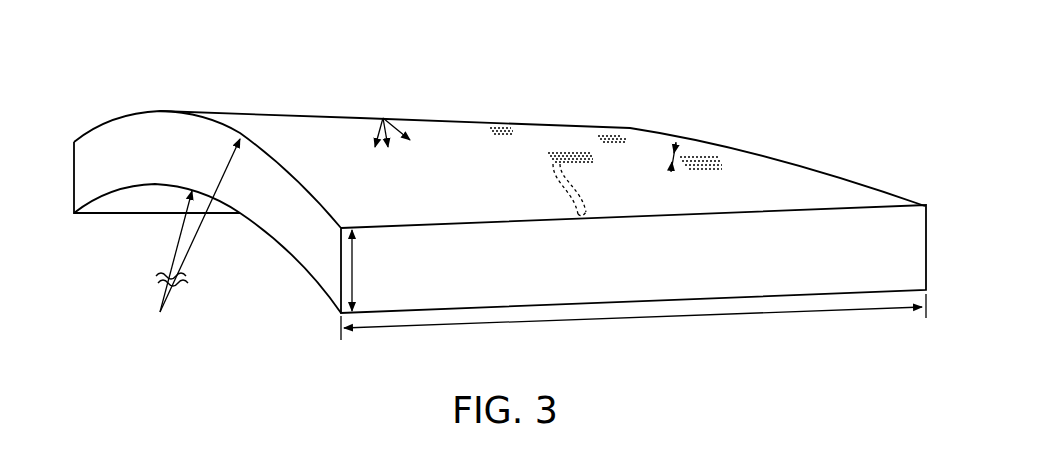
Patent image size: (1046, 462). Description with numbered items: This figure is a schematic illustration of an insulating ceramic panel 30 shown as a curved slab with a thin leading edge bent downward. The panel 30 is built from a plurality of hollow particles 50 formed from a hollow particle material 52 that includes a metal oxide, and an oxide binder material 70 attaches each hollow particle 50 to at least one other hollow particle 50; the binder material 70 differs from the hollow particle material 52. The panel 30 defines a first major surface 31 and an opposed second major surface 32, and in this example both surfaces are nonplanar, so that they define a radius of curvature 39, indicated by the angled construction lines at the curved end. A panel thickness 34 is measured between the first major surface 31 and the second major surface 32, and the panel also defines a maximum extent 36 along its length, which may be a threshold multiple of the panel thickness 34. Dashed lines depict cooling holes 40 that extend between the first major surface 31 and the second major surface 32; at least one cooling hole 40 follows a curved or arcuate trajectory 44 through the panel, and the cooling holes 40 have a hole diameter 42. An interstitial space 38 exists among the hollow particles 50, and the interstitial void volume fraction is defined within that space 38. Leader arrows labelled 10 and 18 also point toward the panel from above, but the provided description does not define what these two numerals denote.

The article of footwear 10 is at (157, 68).
The sole structure 18 is at (195, 74).
The insulating ceramic panel 30 is at (236, 84).
The first major surface 31 is at (328, 142).
The second major surface 32 is at (138, 197).
The panel thickness 34 is at (355, 267).
The maximum extent 36 is at (634, 321).
The interstitial space 38 is at (772, 176).
The radius of curvature 39 is at (183, 230).
The cooling holes 40 is at (551, 153).
The hole diameter 42 is at (672, 171).
The curved trajectory 44 is at (570, 180).
The hollow particles 50 is at (383, 118).
The hollow particle material 52 is at (427, 147).
The oxide binder material 70 is at (456, 147).